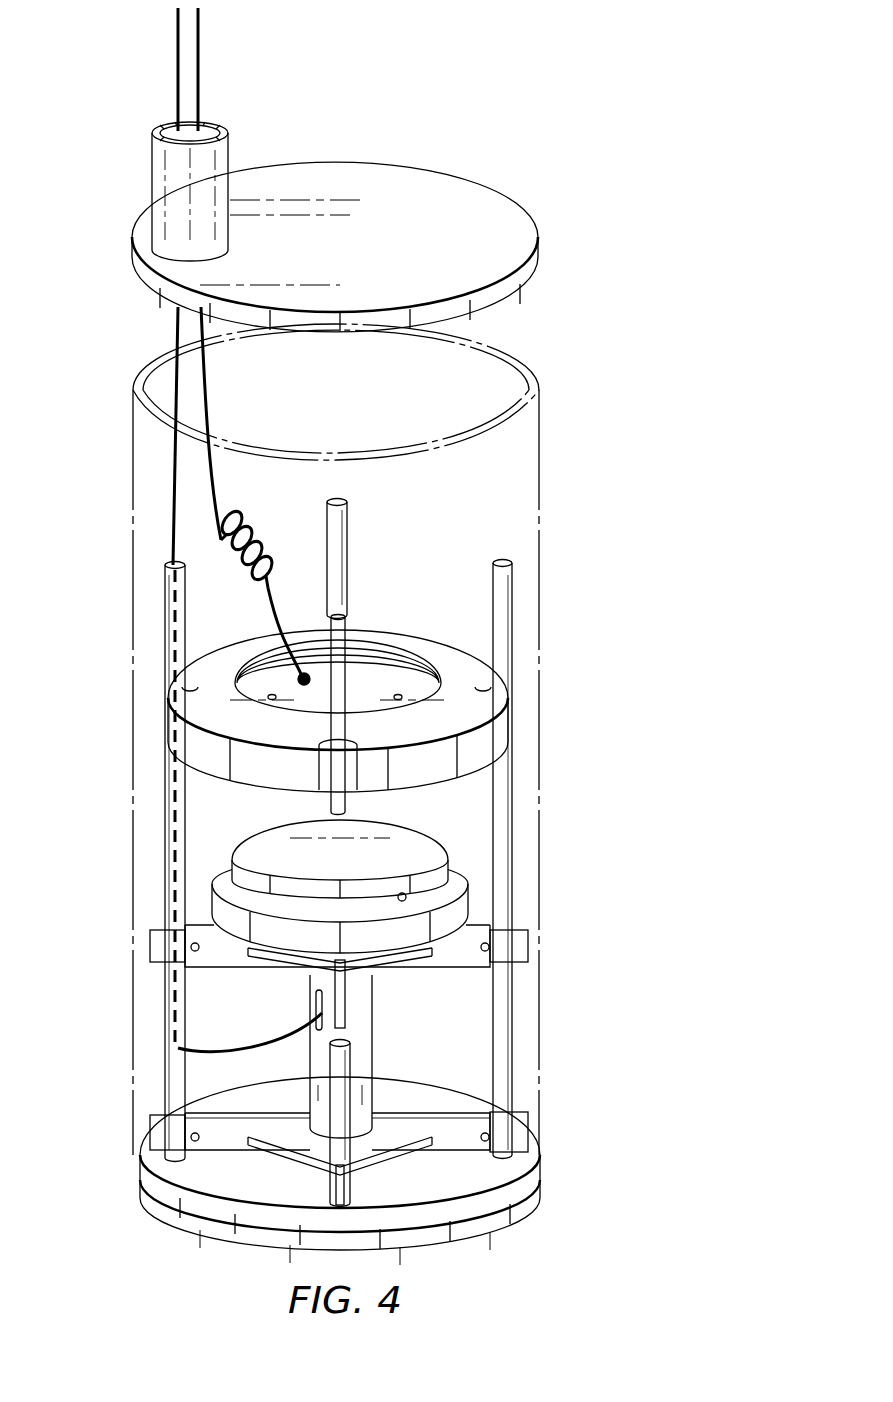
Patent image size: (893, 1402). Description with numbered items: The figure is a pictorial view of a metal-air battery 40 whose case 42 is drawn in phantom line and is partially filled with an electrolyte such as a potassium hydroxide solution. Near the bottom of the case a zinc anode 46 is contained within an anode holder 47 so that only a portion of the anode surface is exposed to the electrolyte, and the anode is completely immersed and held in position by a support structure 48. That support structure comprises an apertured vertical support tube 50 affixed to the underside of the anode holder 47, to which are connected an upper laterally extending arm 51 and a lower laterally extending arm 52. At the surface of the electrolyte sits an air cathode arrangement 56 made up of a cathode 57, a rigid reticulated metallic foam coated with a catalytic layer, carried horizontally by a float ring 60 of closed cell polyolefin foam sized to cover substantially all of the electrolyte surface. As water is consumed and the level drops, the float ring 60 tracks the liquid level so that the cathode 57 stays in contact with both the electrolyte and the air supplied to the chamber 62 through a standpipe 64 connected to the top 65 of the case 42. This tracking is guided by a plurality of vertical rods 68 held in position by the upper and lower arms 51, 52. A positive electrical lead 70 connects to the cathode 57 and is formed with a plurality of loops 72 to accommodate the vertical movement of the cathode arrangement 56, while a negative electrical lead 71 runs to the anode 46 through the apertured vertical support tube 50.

The metal-air battery 40 is at (15, 823).
The case 42 is at (134, 490).
The anode 46 is at (400, 836).
The anode holder 47 is at (454, 875).
The support structure 48 is at (419, 1082).
The apertured vertical support tube 50 is at (366, 1040).
The upper laterally extending arm 51 is at (218, 962).
The lower laterally extending arm 52 is at (262, 1113).
The air cathode arrangement 56 is at (338, 674).
The cathode 57 is at (395, 688).
The float ring 60 is at (432, 773).
The chamber 62 is at (480, 478).
The standpipe 64 is at (152, 182).
The top 65 is at (393, 182).
The vertical rods 68 is at (349, 530).
The positive electrical lead 70 is at (198, 60).
The negative electrical lead 71 is at (178, 62).
The loops 72 is at (248, 528).